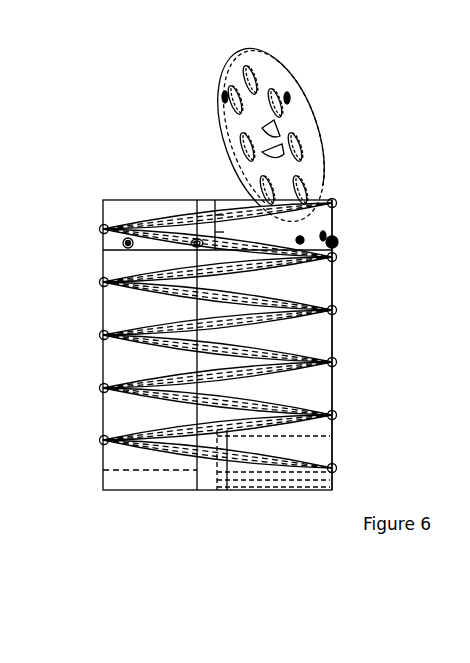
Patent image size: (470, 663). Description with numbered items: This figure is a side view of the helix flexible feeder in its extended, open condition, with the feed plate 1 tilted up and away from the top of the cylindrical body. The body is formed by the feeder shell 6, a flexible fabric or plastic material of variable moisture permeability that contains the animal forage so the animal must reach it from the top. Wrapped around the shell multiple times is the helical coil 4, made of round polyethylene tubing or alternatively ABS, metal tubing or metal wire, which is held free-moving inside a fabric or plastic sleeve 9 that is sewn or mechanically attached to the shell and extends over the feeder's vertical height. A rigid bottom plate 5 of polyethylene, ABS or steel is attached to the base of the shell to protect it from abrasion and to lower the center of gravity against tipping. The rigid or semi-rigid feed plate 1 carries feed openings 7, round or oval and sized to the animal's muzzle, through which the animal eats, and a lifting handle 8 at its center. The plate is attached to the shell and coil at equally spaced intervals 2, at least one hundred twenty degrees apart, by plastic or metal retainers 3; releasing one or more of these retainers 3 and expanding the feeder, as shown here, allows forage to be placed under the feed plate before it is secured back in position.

The feed plate 1 is at (300, 135).
The equally spaced intervals 2 is at (235, 199).
The retainers 3 is at (280, 120).
The helical coil 4 is at (266, 336).
The bottom plate 5 is at (217, 366).
The feeder shell 6 is at (376, 345).
The feed openings 7 is at (291, 110).
The lifting handle 8 is at (332, 134).
The sleeve 9 is at (273, 481).